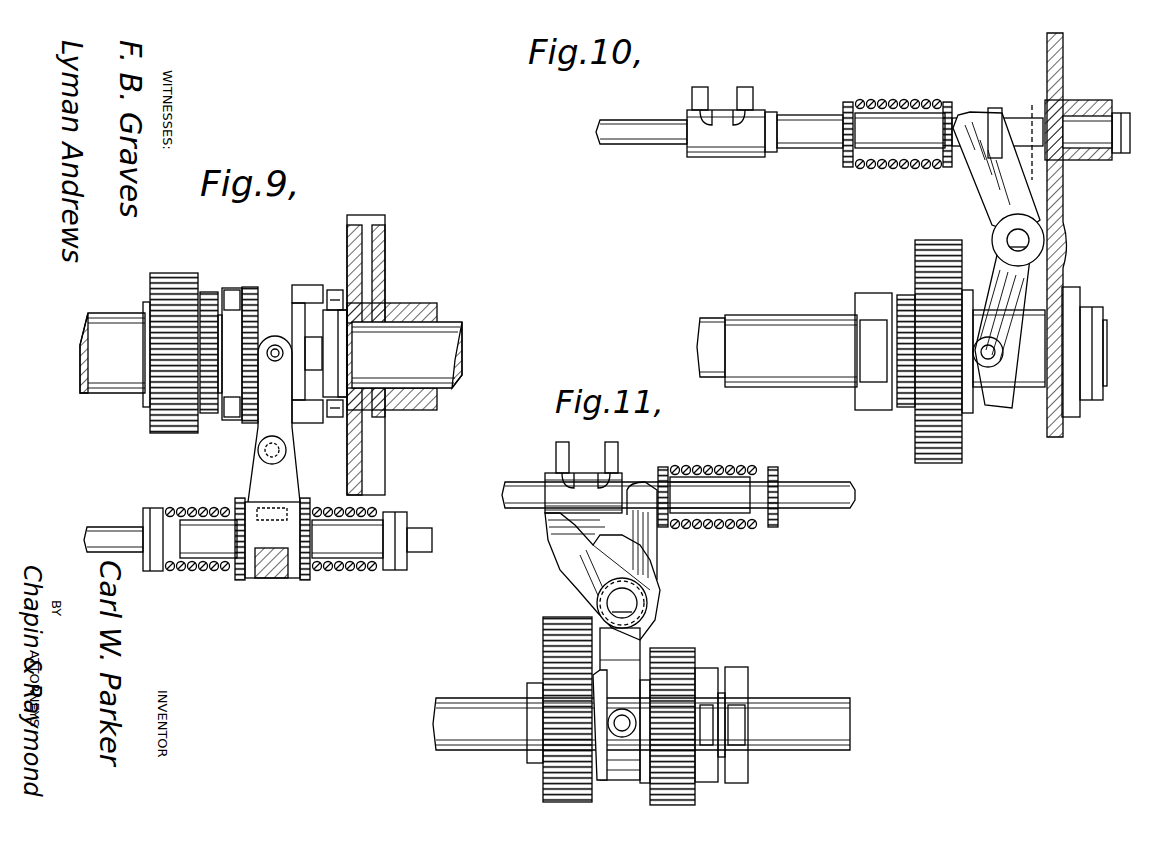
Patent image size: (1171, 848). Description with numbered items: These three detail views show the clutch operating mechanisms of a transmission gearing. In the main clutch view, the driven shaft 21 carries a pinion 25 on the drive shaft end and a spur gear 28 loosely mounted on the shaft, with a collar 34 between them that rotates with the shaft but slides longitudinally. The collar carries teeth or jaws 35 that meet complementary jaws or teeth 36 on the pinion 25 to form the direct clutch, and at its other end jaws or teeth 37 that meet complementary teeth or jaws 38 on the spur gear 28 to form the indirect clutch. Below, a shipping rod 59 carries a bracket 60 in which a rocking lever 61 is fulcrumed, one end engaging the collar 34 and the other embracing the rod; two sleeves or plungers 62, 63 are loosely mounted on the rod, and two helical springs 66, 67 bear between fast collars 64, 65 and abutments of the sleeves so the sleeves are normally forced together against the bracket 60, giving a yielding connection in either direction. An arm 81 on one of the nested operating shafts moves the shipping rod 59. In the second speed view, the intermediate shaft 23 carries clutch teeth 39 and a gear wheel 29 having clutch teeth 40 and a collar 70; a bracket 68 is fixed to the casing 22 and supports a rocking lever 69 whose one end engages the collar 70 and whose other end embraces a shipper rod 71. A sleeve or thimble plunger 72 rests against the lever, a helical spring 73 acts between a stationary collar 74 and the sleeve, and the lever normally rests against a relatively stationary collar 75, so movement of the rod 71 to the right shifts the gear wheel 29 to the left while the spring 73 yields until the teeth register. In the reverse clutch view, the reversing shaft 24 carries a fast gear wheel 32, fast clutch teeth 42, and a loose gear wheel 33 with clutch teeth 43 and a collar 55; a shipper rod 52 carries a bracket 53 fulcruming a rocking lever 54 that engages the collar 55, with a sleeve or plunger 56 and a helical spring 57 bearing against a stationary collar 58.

In FIG. 9, the driven shaft 21 is at (445, 330).
In FIG. 10, the casing 22 is at (1063, 56).
In FIG. 10, the intermediate shaft 23 is at (770, 322).
In FIG. 11, the reversing shaft 24 is at (800, 706).
In FIG. 9, the pinion 25 is at (155, 430).
In FIG. 9, the spur gear 28 is at (380, 265).
In FIG. 10, the gear wheel 29 is at (945, 462).
In FIG. 11, the gear wheel 32 is at (545, 640).
In FIG. 11, the gear wheel 33 is at (690, 650).
In FIG. 9, the collar 34 is at (270, 300).
In FIG. 9, the teeth or jaws 35 is at (232, 293).
In FIG. 9, the complementary jaws or teeth 36 is at (207, 292).
In FIG. 9, the jaws or teeth 37 is at (312, 295).
In FIG. 9, the complementary teeth or jaws 38 is at (335, 290).
In FIG. 10, the clutch teeth 39 is at (863, 298).
In FIG. 10, the clutch teeth or jaws 40 is at (906, 296).
In FIG. 11, the clutch teeth 42 is at (748, 680).
In FIG. 11, the clutch teeth 43 is at (715, 672).
In FIG. 11, the shipper rod 52 is at (838, 506).
In FIG. 11, the bracket 53 is at (562, 562).
In FIG. 11, the rocking lever 54 is at (650, 560).
In FIG. 11, the collar 55 is at (622, 768).
In FIG. 11, the sleeve or thimble or plunger 56 is at (740, 485).
In FIG. 11, the helical spring 57 is at (722, 468).
In FIG. 11, the stationary collar 58 is at (778, 478).
In FIG. 9, the shipping rod 59 is at (110, 528).
In FIG. 9, the bracket 60 is at (250, 484).
In FIG. 9, the rocking lever 61 is at (258, 420).
In FIG. 9, the sleeve or thimble or plunger 62 is at (240, 578).
In FIG. 9, the sleeve or thimble or plunger 63 is at (360, 560).
In FIG. 9, the collar 64 is at (155, 572).
In FIG. 9, the collar 65 is at (410, 552).
In FIG. 9, the helical spring 66 is at (215, 568).
In FIG. 9, the helical spring 67 is at (395, 572).
In FIG. 10, the bracket 68 is at (1018, 125).
In FIG. 10, the rocking lever 69 is at (975, 175).
In FIG. 10, the collar 70 is at (1000, 392).
In FIG. 10, the shipper rod 71 is at (630, 122).
In FIG. 10, the sleeve or thimble plunger 72 is at (910, 112).
In FIG. 10, the helical spring 73 is at (880, 166).
In FIG. 10, the stationary collar 74 is at (847, 167).
In FIG. 10, the relatively stationary collar 75 is at (995, 120).
In FIG. 9, the arm 81 is at (270, 580).